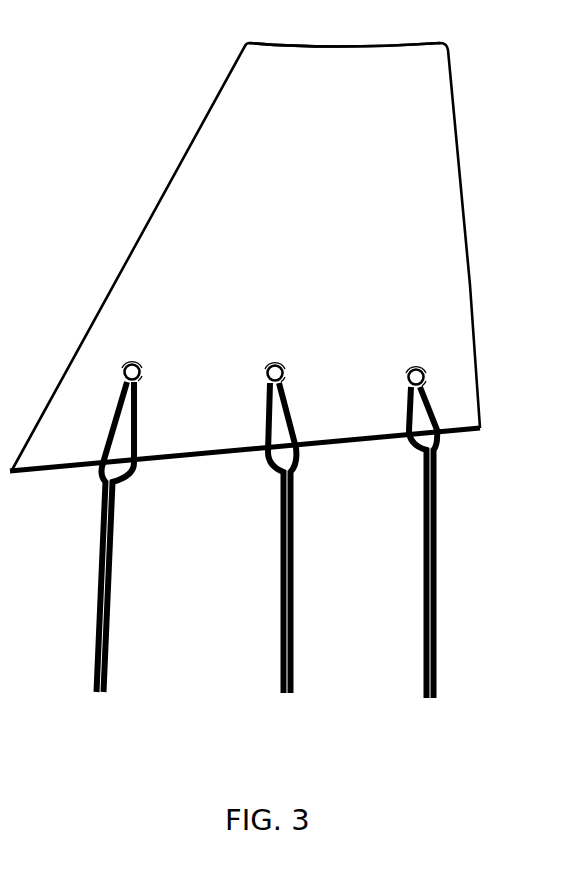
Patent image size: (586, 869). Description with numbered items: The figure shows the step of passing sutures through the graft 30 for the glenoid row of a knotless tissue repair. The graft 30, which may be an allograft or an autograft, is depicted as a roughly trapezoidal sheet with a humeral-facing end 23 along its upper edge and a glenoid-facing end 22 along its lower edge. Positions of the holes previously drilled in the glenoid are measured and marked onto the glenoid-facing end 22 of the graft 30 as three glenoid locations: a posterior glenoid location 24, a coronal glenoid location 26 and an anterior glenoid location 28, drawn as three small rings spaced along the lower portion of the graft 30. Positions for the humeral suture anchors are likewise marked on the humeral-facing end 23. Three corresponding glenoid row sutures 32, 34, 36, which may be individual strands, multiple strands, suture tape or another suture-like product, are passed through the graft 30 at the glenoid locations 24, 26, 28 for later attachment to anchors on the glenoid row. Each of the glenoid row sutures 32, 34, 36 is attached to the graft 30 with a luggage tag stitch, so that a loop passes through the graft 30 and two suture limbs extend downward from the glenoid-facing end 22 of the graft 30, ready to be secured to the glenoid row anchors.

The glenoid-facing end 22 is at (227, 444).
The humeral-facing end 23 is at (346, 76).
The posterior glenoid location 24 is at (122, 364).
The coronal glenoid location 26 is at (263, 365).
The anterior glenoid location 28 is at (428, 377).
The graft 30 is at (326, 237).
The glenoid row suture 32 is at (114, 528).
The glenoid row suture 34 is at (295, 528).
The glenoid row suture 36 is at (438, 528).